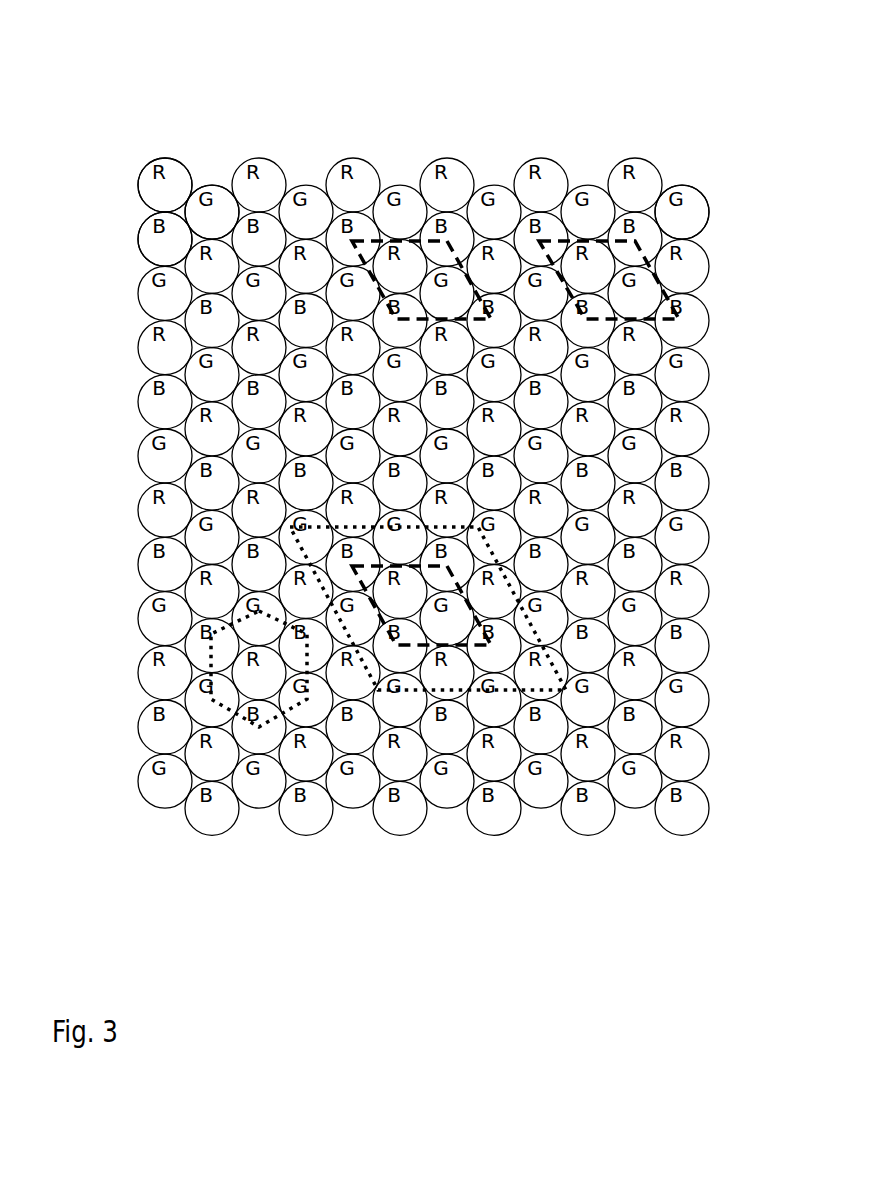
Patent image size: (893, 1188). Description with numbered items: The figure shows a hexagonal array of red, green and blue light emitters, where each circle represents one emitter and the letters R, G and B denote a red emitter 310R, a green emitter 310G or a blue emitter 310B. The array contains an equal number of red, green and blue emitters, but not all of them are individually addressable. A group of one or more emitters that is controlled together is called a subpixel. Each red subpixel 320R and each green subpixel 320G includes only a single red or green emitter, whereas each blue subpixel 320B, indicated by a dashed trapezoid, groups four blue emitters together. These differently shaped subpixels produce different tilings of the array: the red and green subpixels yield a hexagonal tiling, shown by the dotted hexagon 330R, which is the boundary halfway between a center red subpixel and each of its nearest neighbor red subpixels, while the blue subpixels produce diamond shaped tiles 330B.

The red emitter 310R is at (168, 160).
The green emitter 310G is at (212, 185).
The blue emitter 310B is at (145, 217).
The red subpixel 320R is at (542, 157).
The blue subpixel 320B is at (585, 240).
The green subpixel 320G is at (697, 185).
The dotted hexagon 330R is at (233, 735).
The diamond shaped tile 330B is at (470, 692).